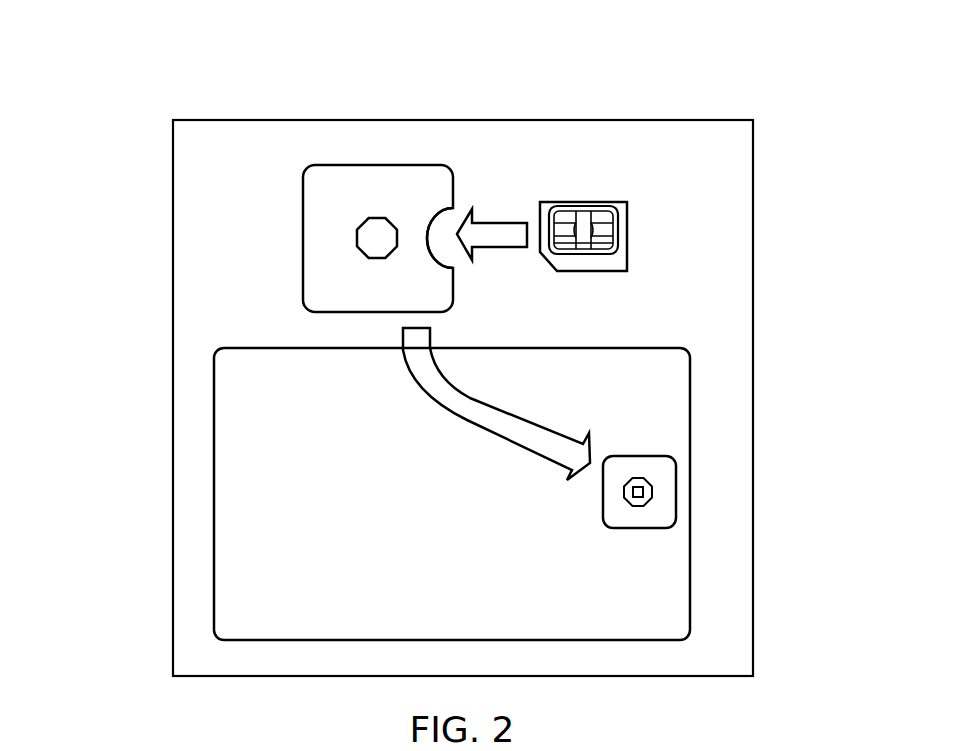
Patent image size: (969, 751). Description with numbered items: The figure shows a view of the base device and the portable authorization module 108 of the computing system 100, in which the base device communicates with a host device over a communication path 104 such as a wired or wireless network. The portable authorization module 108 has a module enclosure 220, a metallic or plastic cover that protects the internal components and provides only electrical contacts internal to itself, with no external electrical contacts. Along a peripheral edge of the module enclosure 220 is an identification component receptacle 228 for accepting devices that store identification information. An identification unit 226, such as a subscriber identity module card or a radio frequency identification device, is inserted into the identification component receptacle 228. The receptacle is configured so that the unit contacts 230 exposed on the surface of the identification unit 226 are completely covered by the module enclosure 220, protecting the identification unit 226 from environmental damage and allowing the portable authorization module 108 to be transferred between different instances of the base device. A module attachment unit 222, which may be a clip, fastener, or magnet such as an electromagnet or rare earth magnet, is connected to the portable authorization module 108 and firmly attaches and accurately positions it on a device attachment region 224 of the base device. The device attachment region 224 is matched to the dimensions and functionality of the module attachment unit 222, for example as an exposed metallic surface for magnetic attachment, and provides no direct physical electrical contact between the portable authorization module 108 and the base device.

The computing system 100 is at (185, 67).
The communication path 104 is at (255, 490).
The portable authorization module 108 is at (298, 195).
The module enclosure 220 is at (325, 182).
The module attachment unit 222 is at (366, 236).
The device attachment region 224 is at (663, 492).
The identification unit 226 is at (686, 200).
The identification component receptacle 228 is at (442, 225).
The unit contacts 230 is at (605, 220).